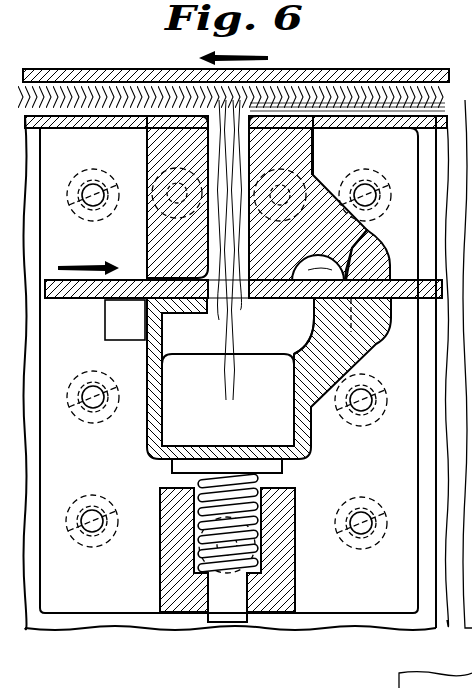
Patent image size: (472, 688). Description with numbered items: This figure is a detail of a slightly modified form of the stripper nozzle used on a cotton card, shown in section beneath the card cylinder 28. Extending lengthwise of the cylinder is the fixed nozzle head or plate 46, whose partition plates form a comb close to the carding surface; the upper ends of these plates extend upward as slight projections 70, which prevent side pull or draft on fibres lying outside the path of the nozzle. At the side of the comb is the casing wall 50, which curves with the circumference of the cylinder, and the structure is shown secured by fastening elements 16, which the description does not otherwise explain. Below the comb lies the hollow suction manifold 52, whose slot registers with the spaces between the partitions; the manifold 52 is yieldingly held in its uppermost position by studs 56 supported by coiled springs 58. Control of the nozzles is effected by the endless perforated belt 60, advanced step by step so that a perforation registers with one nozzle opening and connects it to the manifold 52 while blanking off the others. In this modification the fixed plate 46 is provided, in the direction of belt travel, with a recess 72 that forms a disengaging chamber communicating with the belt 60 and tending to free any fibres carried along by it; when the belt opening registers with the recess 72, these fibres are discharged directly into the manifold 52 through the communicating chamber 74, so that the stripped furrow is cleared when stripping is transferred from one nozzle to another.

The card cylinder 28 is at (374, 70).
The projections 70 is at (212, 113).
The nozzle head 46 is at (313, 146).
The casing wall 50 is at (436, 131).
The rivet 16 is at (343, 211).
The recess 72 is at (350, 266).
The belt 60 is at (88, 299).
The communicating chamber 74 is at (316, 321).
The manifold 52 is at (228, 400).
The coiled springs 58 is at (259, 481).
The studs 56 is at (240, 623).